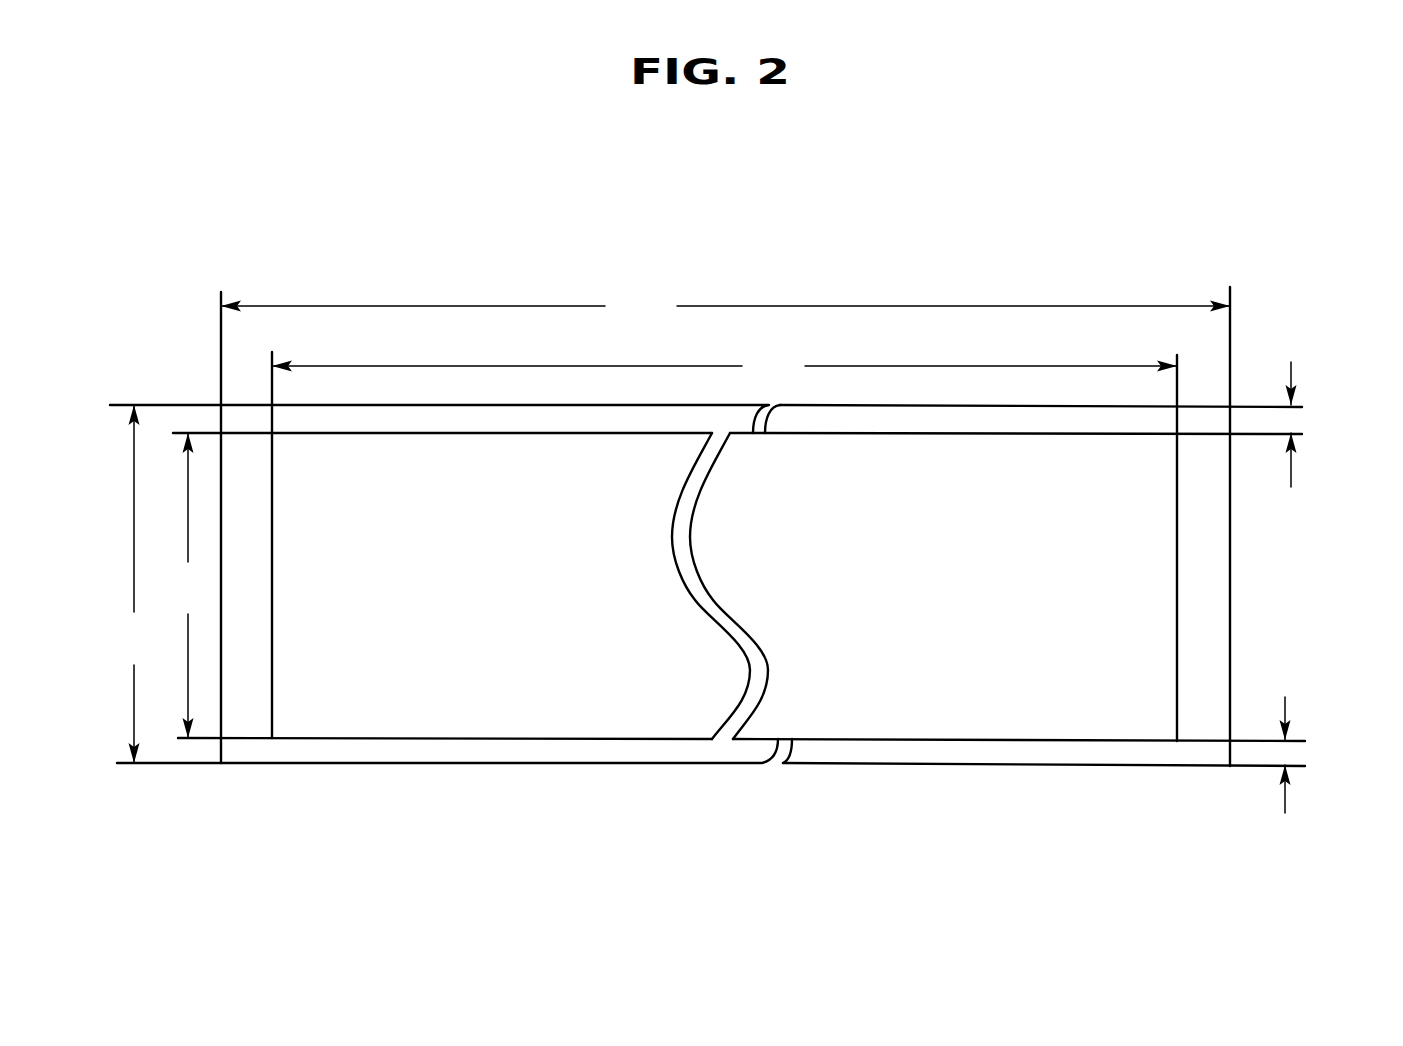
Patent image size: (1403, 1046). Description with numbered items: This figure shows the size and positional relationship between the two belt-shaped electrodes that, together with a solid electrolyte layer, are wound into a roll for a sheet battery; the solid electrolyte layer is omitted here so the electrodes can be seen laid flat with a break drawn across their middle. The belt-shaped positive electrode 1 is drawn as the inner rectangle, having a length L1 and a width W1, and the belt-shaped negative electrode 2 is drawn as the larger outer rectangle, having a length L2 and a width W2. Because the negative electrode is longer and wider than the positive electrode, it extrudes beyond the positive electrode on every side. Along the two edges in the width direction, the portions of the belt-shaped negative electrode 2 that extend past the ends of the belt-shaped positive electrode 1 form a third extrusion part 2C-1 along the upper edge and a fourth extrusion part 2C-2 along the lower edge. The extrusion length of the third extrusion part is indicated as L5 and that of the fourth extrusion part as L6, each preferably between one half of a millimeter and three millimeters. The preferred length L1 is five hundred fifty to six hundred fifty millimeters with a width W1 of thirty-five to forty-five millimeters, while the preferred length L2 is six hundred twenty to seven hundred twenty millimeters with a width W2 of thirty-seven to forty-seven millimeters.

The belt-shaped positive electrode 1 is at (739, 467).
The belt-shaped negative electrode 2 is at (725, 500).
The third extrusion part 2C-1 is at (706, 305).
The fourth extrusion part 2C-2 is at (711, 806).
The length of the belt-shaped positive electrode L1 is at (724, 370).
The length of the belt-shaped negative electrode L2 is at (725, 307).
The extrusion length of the third extrusion part L5 is at (1317, 424).
The extrusion length of the fourth extrusion part L6 is at (1316, 755).
The width of the belt-shaped positive electrode W1 is at (198, 585).
The width of the belt-shaped negative electrode W2 is at (147, 584).